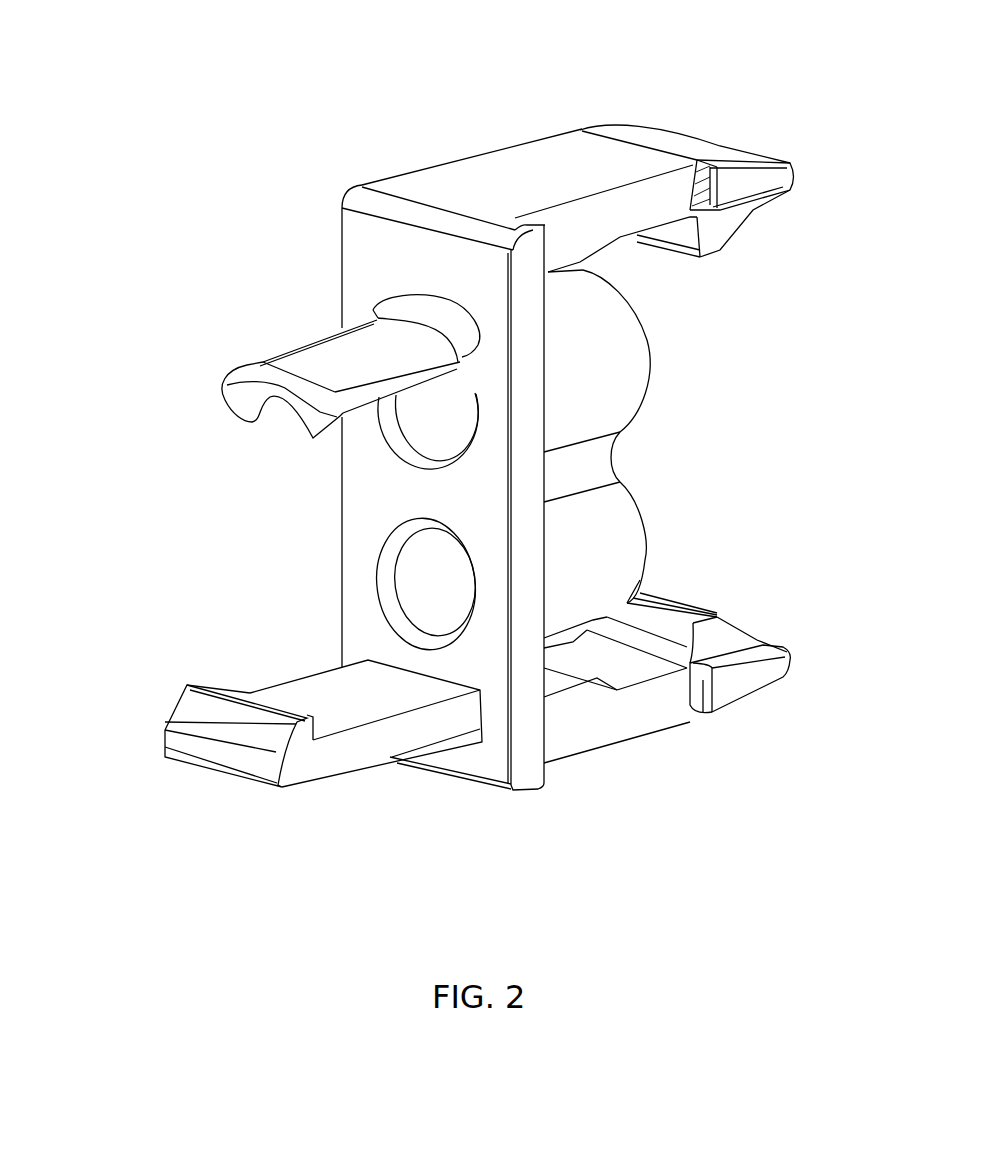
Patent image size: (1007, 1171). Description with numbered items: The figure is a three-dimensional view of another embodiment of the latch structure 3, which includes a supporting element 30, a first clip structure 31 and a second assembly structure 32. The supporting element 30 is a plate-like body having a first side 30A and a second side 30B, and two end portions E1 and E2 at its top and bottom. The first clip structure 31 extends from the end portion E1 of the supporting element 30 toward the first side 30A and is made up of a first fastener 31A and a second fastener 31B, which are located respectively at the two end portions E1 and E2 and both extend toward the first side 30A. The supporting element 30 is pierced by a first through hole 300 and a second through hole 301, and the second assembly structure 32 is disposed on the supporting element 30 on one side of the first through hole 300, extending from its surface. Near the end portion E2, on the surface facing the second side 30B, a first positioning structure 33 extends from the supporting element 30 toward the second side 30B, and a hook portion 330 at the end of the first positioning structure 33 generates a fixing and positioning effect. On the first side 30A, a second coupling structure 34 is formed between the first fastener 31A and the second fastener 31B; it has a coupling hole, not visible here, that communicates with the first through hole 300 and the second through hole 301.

The latch structure 3 is at (134, 122).
The supporting element 30 is at (363, 255).
The first side 30A is at (815, 394).
The second side 30B is at (143, 518).
The first through hole 300 is at (432, 408).
The second through hole 301 is at (432, 575).
The first clip structure 31 is at (716, 151).
The first fastener 31A is at (535, 165).
The second fastener 31B is at (608, 723).
The second assembly structure 32 is at (265, 375).
The first positioning structure 33 is at (338, 752).
The hook portion 330 is at (197, 707).
The second coupling structure 34 is at (632, 408).
The end portion E1 is at (363, 188).
The end portion E2 is at (528, 780).